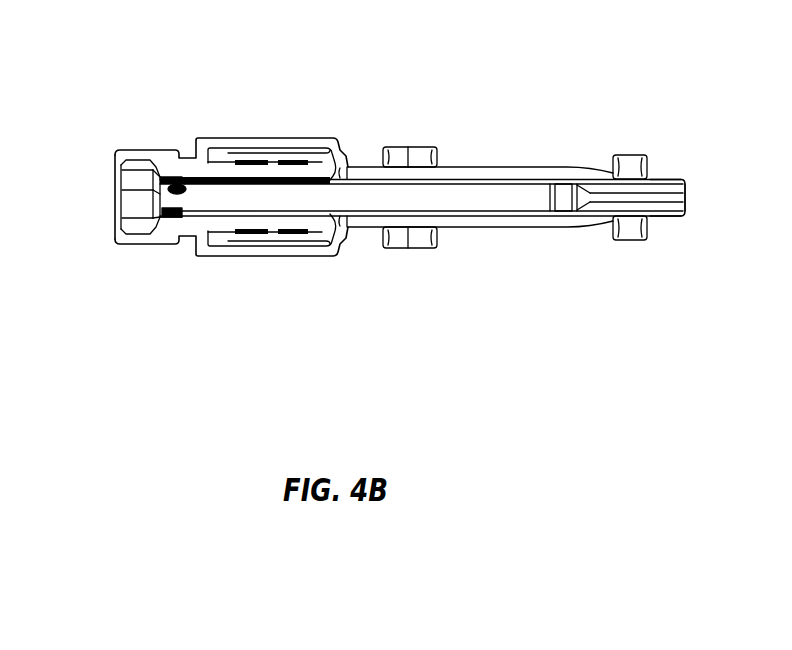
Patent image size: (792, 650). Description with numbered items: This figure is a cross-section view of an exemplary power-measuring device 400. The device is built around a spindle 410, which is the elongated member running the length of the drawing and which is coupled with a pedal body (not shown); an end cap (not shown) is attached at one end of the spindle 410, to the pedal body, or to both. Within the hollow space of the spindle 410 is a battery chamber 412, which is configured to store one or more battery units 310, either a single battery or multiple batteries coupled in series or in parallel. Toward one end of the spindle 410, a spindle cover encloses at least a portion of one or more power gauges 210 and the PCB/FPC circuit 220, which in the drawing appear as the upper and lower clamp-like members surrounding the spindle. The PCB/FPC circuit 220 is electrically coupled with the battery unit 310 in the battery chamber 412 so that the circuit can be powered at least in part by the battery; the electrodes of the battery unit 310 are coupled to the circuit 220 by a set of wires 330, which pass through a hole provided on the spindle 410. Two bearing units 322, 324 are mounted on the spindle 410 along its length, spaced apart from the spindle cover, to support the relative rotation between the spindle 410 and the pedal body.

The power-measuring device 400 is at (674, 52).
The battery chamber 412 is at (167, 198).
The set of wires 330 is at (185, 184).
The PCB/FPC circuit 220 is at (247, 150).
The power gauges 210 is at (252, 237).
The battery unit 310 is at (482, 195).
The bearing unit 322 is at (400, 153).
The bearing unit 324 is at (627, 162).
The spindle 410 is at (673, 213).